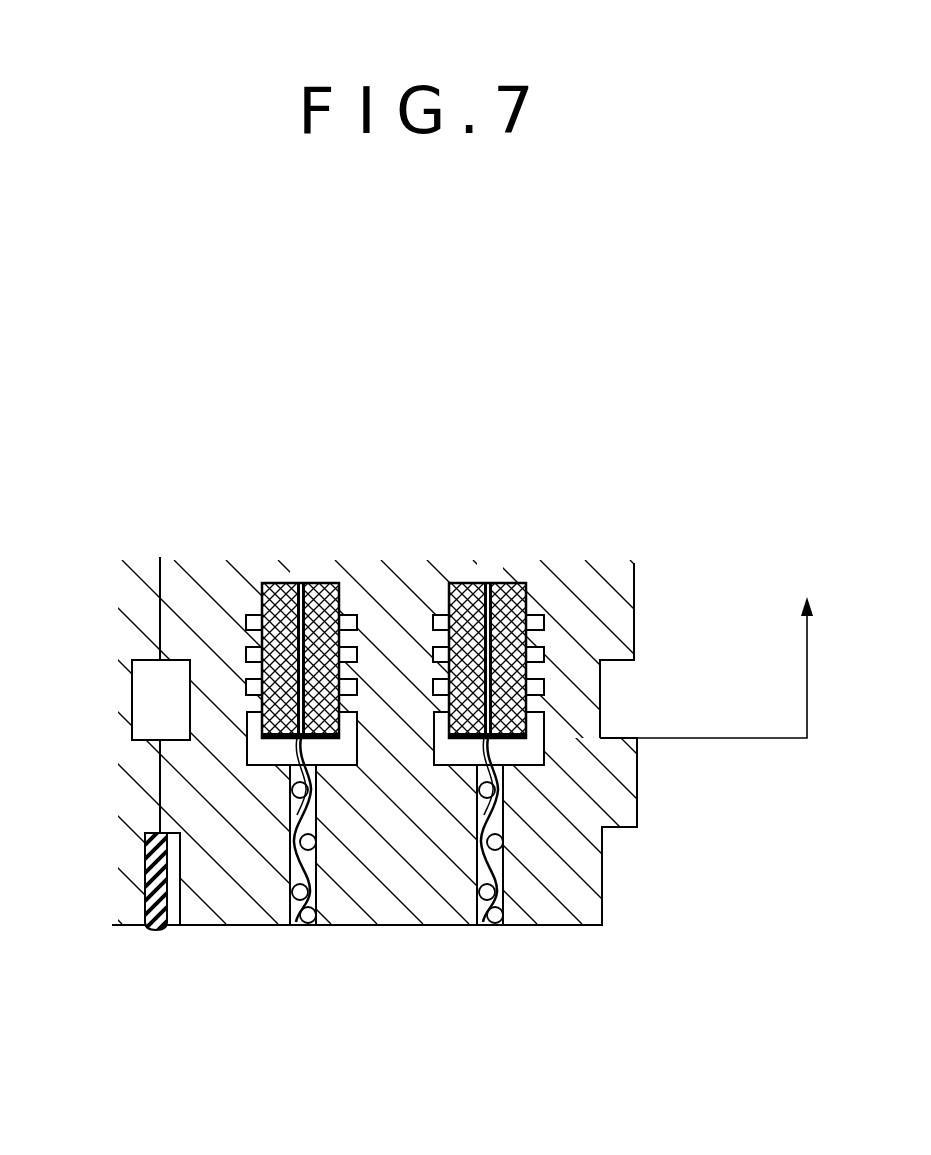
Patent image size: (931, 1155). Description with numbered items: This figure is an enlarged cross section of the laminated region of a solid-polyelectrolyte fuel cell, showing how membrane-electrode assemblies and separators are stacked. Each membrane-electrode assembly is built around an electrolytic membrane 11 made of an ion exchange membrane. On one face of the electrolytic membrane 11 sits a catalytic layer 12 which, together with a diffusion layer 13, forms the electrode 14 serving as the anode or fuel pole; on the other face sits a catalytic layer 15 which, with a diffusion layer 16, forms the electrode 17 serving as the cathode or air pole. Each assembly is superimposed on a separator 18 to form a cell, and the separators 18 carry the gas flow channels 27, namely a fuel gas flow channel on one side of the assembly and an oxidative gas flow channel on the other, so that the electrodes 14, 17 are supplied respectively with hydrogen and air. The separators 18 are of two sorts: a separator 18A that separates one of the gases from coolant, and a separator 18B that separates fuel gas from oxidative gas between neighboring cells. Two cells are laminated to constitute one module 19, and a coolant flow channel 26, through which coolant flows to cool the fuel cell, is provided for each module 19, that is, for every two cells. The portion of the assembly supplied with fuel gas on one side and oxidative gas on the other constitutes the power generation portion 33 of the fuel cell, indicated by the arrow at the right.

The electrolytic membrane 11 is at (305, 585).
The catalytic layer 12 is at (288, 587).
The diffusion layer 13 is at (273, 583).
The electrode 14 is at (349, 557).
The catalytic layer 15 is at (330, 583).
The diffusion layer 16 is at (340, 587).
The electrode 17 is at (432, 571).
The separator 18 is at (180, 577).
The separator 18A is at (200, 622).
The separator 18B is at (397, 635).
The module 19 is at (642, 960).
The coolant flow channel 26 is at (153, 697).
The gas flow channel 27 is at (180, 577).
The power generation portion 33 is at (710, 645).